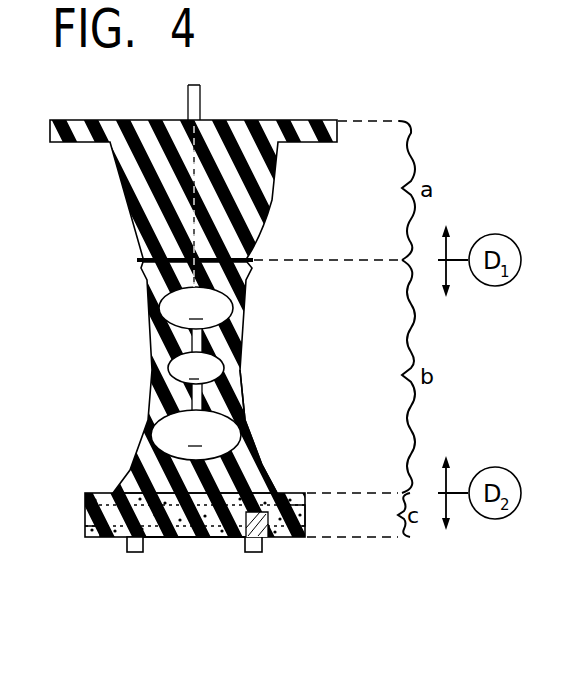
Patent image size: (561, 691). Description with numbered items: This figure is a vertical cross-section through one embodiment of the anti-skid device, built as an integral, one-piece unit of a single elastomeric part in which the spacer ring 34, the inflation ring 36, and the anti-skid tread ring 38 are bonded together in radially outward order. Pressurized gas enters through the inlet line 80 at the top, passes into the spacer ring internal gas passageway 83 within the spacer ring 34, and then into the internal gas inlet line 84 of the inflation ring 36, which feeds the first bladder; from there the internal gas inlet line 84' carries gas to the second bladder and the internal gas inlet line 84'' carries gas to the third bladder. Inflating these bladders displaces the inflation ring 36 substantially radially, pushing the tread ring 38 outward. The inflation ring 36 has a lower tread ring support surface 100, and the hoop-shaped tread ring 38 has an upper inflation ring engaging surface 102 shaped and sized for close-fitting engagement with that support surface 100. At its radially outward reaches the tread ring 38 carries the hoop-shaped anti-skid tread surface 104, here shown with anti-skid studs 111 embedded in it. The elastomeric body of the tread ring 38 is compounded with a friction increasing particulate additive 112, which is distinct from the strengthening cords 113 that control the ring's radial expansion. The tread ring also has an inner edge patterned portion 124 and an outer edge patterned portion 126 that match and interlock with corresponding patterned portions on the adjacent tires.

The spacer ring 34 is at (128, 206).
The inflation ring 36 is at (152, 378).
The anti-skid tread ring 38 is at (85, 512).
The inlet line 80 is at (187, 103).
The spacer ring internal gas passageway 83 is at (188, 176).
The internal gas inlet line 84 is at (168, 264).
The internal gas inlet line 84' is at (231, 321).
The internal gas inlet line 84'' is at (165, 406).
The tread ring support surface 100 is at (251, 447).
The inflation ring engaging surface 102 is at (220, 538).
The anti-skid tread surface 104 is at (150, 538).
The anti-skid studs 111 is at (132, 553).
The friction increasing particulate additive 112 is at (85, 505).
The strengthening cords 113 is at (84, 495).
The inner edge patterned portion 124 is at (306, 522).
The outer edge patterned portion 126 is at (85, 530).